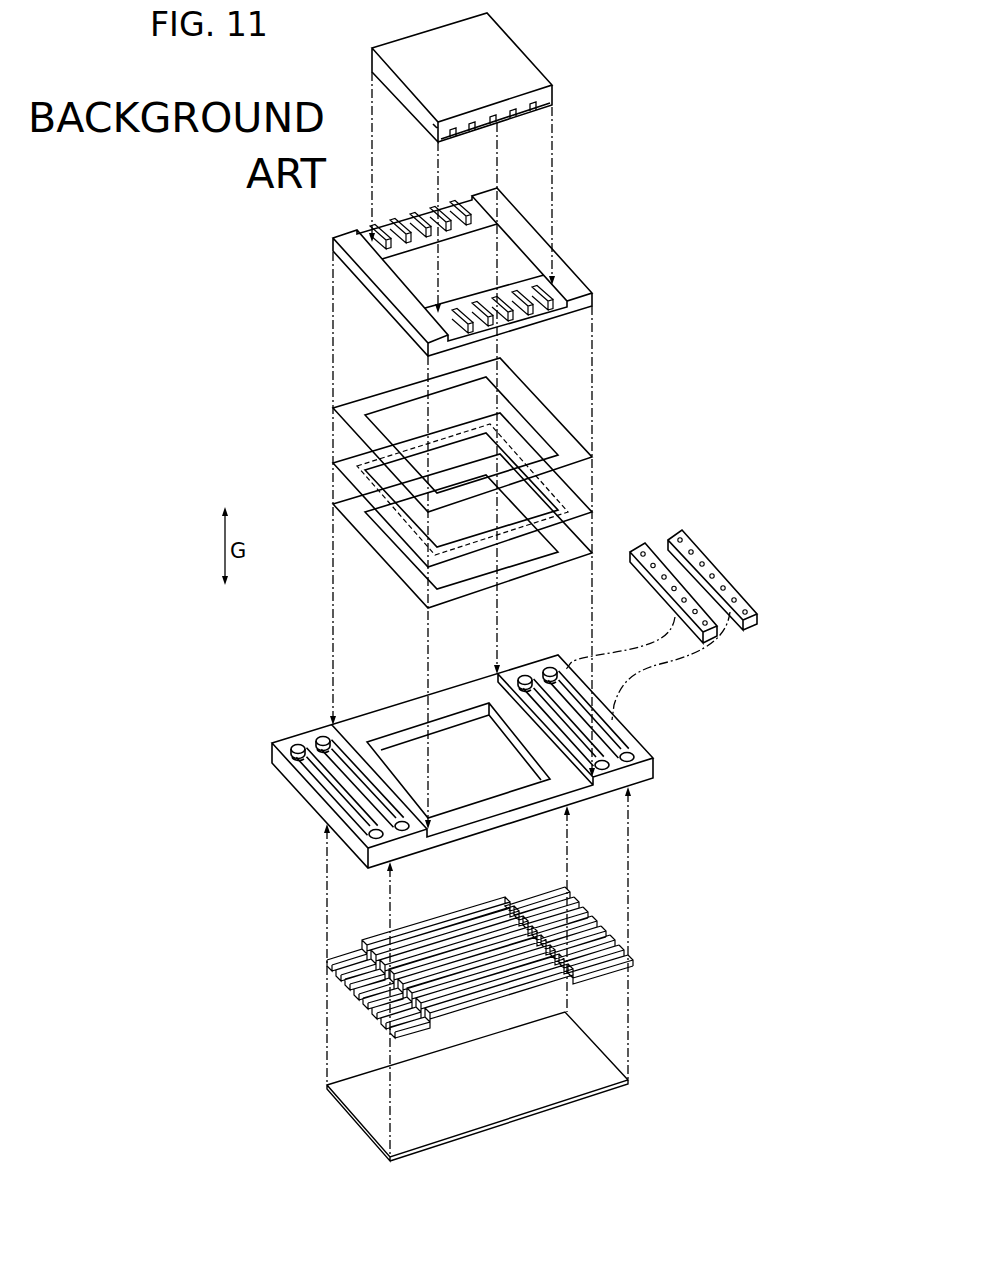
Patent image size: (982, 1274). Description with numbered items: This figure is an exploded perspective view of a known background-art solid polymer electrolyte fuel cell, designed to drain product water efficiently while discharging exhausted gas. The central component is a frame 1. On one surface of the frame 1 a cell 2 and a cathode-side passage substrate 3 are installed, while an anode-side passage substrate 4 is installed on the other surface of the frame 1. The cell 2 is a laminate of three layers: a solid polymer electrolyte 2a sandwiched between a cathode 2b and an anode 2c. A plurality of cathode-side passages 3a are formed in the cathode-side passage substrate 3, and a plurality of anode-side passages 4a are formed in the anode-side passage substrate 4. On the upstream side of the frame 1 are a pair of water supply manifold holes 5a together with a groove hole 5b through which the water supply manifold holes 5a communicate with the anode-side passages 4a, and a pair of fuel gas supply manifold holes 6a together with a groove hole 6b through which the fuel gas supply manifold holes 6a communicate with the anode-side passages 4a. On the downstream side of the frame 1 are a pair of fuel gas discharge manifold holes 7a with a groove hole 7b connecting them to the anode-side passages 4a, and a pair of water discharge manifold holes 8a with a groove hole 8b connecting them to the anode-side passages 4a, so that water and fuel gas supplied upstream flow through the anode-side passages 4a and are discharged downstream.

The frame 1 is at (499, 721).
The cell 2 is at (502, 483).
The solid polymer electrolyte 2a is at (575, 510).
The cathode 2b is at (532, 502).
The anode 2c is at (645, 418).
The cathode-side passage substrate 3 is at (606, 205).
The cathode-side passages 3a is at (515, 108).
The anode-side passage substrate 4 is at (506, 1024).
The anode-side passages 4a is at (518, 983).
The water supply manifold holes 5a is at (632, 762).
The groove hole 5b is at (600, 723).
The fuel gas supply manifold holes 6a is at (604, 770).
The groove hole 6b is at (580, 737).
The fuel gas discharge manifold holes 7a is at (403, 833).
The groove hole 7b is at (360, 783).
The water discharge manifold holes 8a is at (372, 838).
The groove hole 8b is at (328, 783).